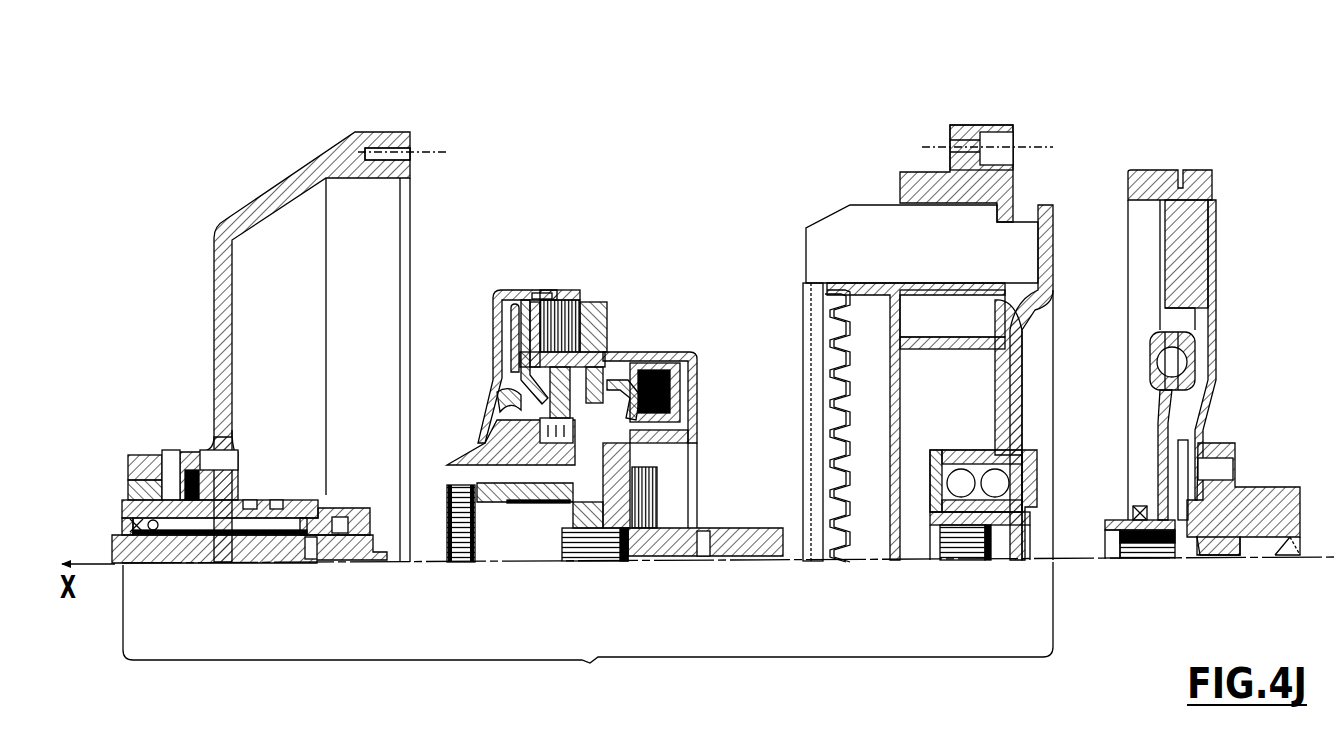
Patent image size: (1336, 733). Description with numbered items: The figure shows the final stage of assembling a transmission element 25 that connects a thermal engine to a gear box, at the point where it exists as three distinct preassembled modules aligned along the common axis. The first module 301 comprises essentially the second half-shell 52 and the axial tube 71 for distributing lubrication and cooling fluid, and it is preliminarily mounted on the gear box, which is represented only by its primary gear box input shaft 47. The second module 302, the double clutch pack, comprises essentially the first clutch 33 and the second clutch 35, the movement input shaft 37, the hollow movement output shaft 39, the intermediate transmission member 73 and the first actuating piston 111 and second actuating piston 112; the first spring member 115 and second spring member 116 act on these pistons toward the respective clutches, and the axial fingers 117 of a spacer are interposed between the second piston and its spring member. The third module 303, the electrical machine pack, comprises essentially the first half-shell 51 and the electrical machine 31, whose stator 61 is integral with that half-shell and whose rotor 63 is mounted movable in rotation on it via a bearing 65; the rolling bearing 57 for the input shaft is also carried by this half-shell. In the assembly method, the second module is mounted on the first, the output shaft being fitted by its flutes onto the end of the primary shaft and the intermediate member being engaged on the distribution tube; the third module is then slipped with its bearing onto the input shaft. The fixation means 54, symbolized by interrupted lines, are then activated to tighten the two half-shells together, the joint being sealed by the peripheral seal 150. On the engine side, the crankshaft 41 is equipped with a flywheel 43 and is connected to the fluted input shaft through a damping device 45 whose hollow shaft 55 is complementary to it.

The transmission element 25 is at (588, 635).
The first module 301 is at (268, 158).
The second module 302 is at (555, 212).
The third module 303 is at (978, 100).
The electrical machine 31 is at (820, 200).
The first clutch 33 is at (566, 300).
The second clutch 35 is at (660, 352).
The movement input shaft 37 is at (668, 560).
The movement output shaft 39 is at (585, 562).
The crankshaft 41 is at (1285, 498).
The flywheel 43 is at (1195, 250).
The damping device 45 is at (1137, 352).
The primary gear box input shaft 47 is at (195, 565).
The first half-shell 51 is at (1053, 278).
The second half-shell 52 is at (214, 350).
The fixation means 54 is at (437, 150).
The hollow shaft 55 is at (1135, 558).
The rolling bearing 57 is at (952, 561).
The stator 61 is at (922, 244).
The rotor 63 is at (916, 421).
The bearing 65 is at (963, 455).
The axial tube 71 is at (240, 500).
The intermediate transmission member 73 is at (487, 505).
The first actuating piston 111 is at (521, 360).
The second actuating piston 112 is at (672, 430).
The first spring member 115 is at (510, 322).
The second spring member 116 is at (497, 400).
The axial fingers 117 is at (597, 356).
The peripheral seal 150 is at (955, 175).